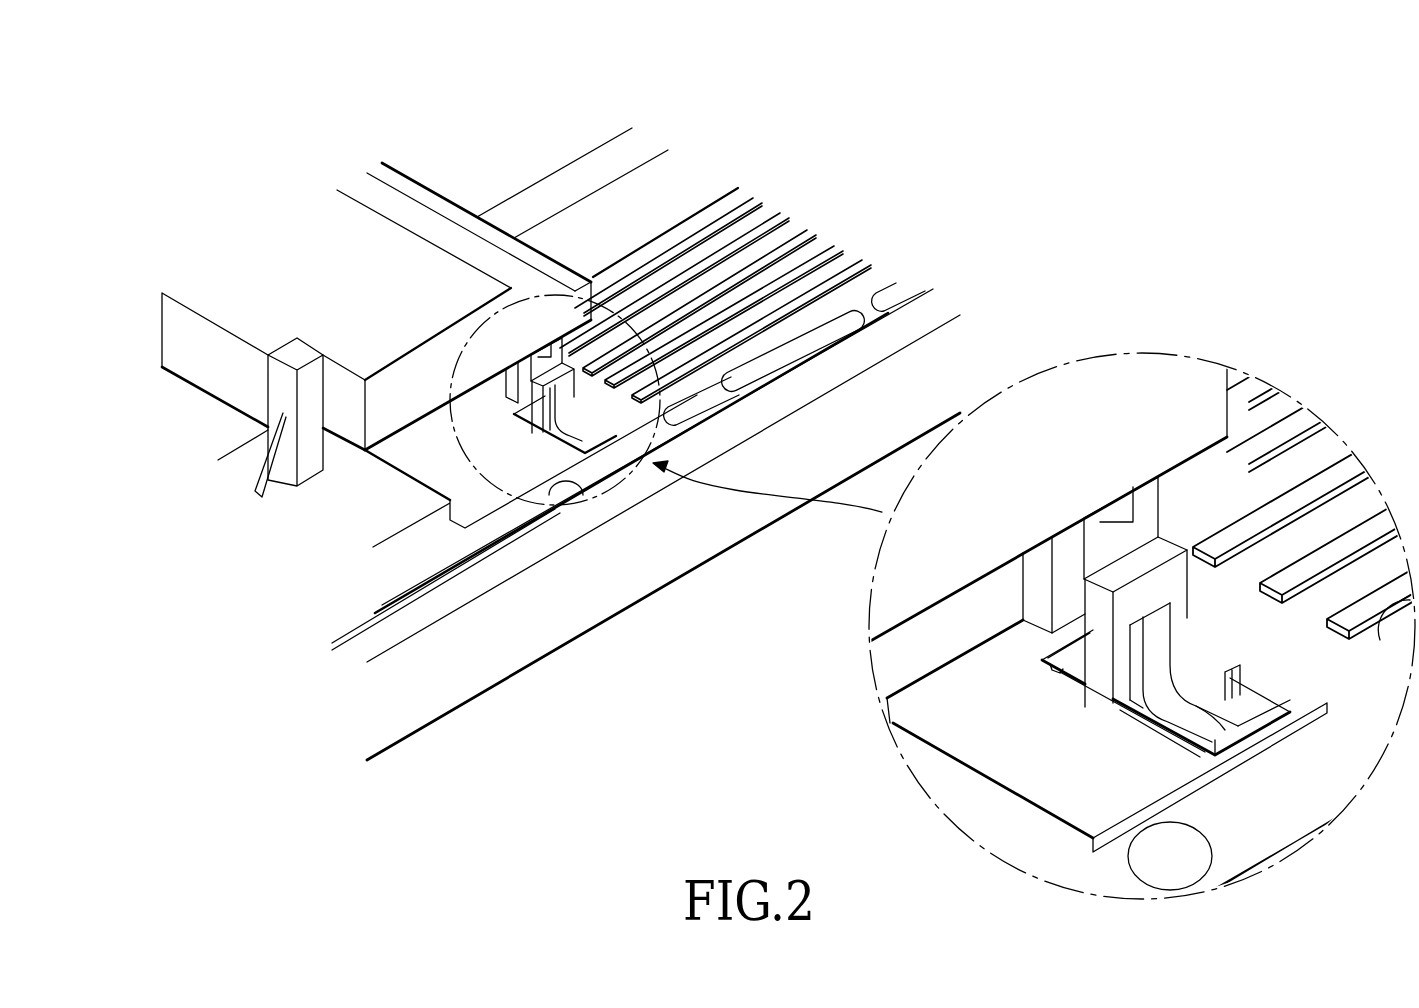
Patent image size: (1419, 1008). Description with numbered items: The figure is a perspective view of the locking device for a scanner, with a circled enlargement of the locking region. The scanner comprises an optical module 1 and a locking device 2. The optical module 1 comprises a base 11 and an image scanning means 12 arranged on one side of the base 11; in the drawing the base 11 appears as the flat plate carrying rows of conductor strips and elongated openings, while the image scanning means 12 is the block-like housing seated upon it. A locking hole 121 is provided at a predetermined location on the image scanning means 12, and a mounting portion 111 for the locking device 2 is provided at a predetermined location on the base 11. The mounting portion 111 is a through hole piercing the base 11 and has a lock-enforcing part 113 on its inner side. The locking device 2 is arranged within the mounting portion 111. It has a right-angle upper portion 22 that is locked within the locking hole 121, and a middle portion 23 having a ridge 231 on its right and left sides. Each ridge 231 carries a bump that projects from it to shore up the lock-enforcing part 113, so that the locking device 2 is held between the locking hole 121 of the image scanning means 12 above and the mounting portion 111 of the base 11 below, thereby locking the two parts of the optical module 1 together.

The optical module 1 is at (597, 113).
The base 11 is at (668, 190).
The image scanning means 12 is at (278, 240).
The locking hole 121 is at (533, 340).
The locking device 2 is at (541, 427).
The right-angle upper portion 22 is at (1103, 552).
The middle portion 23 is at (1152, 693).
The ridge 231 is at (1212, 733).
The mounting portion 111 is at (1263, 710).
The lock-enforcing part 113 is at (1225, 680).